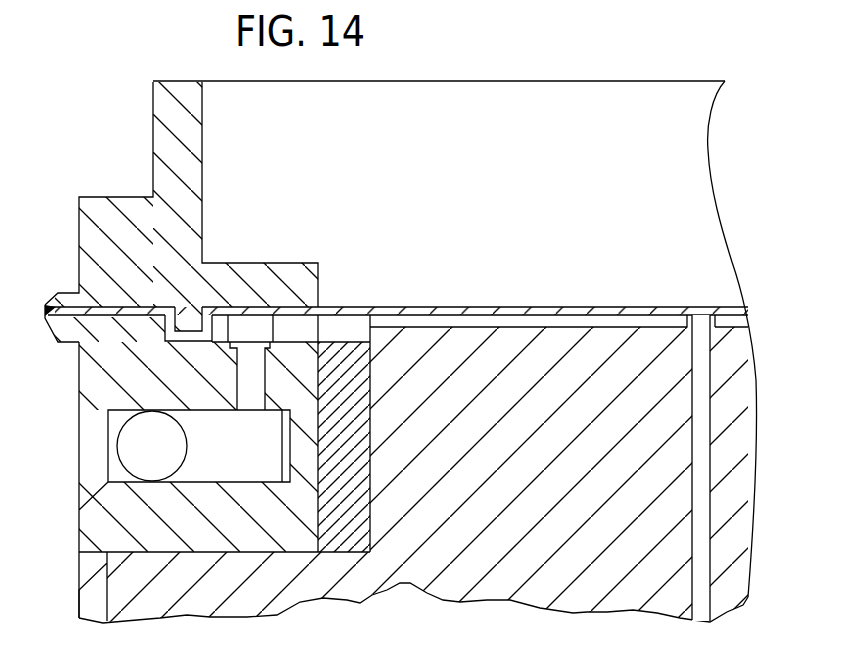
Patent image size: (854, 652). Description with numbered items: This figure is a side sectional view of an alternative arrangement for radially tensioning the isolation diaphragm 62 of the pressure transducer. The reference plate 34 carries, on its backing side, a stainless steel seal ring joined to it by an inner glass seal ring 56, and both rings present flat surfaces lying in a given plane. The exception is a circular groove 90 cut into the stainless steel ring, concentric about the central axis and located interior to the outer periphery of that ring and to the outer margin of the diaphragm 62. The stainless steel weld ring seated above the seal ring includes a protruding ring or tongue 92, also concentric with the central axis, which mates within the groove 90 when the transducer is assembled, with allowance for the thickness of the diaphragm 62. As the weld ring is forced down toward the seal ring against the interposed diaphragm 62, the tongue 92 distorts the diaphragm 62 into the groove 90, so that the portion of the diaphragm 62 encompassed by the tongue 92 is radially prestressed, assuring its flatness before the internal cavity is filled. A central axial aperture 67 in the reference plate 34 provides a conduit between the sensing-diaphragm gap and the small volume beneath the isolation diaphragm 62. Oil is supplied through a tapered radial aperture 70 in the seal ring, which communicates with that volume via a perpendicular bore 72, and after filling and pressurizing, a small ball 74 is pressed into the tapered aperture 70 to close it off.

The isolation diaphragm 62 is at (712, 307).
The tongue 92 is at (190, 322).
The circular groove 90 is at (174, 347).
The tapered radial aperture 70 is at (173, 496).
The perpendicular bore 72 is at (246, 377).
The ball 74 is at (133, 458).
The glass seal ring 56 is at (345, 553).
The reference plate 34 is at (657, 503).
The central axial aperture 67 is at (712, 418).